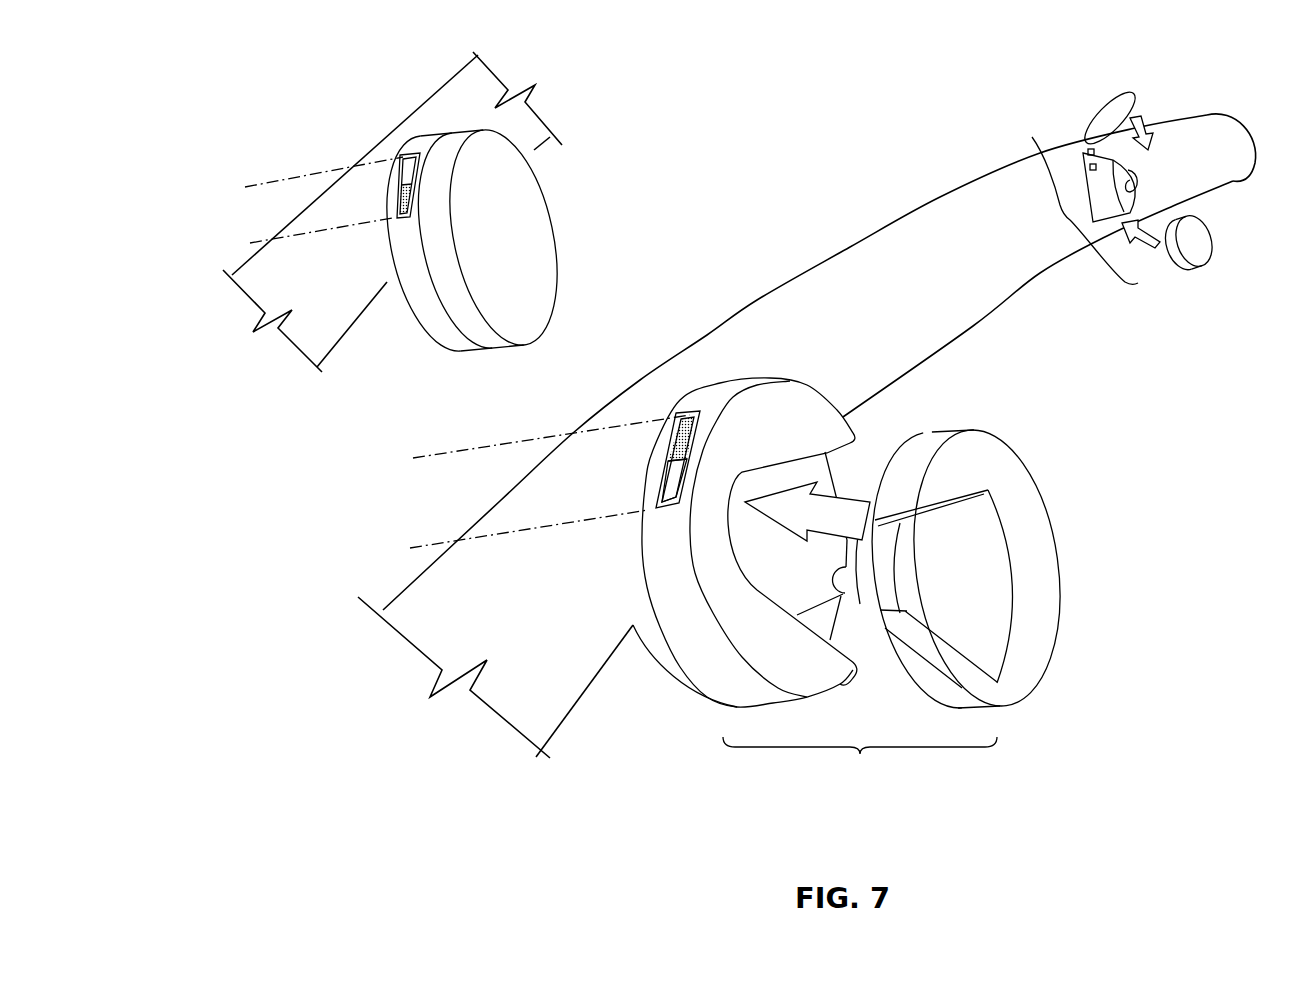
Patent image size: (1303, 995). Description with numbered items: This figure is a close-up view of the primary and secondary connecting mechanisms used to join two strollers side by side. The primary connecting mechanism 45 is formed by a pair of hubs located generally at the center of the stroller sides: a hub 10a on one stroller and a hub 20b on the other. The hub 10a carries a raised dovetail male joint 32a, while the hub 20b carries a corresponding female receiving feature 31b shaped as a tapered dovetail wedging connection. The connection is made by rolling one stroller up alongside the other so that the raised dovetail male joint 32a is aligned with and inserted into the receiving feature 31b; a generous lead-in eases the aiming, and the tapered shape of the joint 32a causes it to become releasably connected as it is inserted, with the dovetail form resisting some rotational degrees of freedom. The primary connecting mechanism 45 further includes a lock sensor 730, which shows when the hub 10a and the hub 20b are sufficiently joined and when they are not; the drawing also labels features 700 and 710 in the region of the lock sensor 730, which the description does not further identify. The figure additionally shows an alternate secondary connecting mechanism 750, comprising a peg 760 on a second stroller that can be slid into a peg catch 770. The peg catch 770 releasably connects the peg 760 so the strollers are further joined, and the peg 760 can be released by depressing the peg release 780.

The hub 10a is at (1040, 492).
The hub 20b is at (852, 430).
The female receiving feature 31b is at (838, 478).
The raised dovetail male joint 32a is at (838, 600).
The primary connecting mechanism 45 is at (533, 250).
The slot 700 is at (413, 163).
The slot portion / sensor window 710 is at (412, 200).
The lock sensor 730 is at (248, 190).
The secondary connecting mechanism 750 is at (1040, 190).
The peg 760 is at (1177, 258).
The peg catch 770 is at (1133, 163).
The peg release 780 is at (1110, 108).